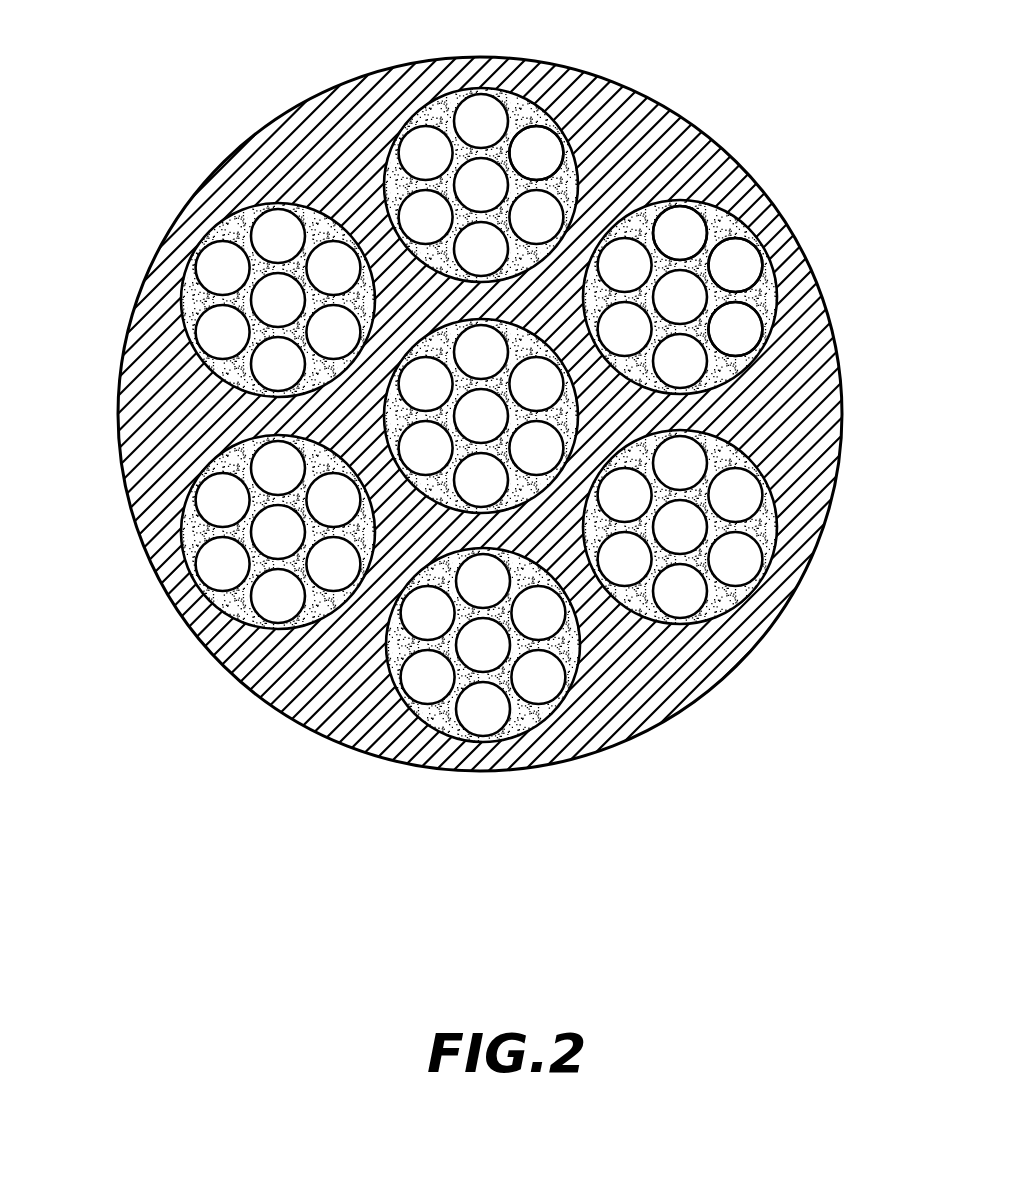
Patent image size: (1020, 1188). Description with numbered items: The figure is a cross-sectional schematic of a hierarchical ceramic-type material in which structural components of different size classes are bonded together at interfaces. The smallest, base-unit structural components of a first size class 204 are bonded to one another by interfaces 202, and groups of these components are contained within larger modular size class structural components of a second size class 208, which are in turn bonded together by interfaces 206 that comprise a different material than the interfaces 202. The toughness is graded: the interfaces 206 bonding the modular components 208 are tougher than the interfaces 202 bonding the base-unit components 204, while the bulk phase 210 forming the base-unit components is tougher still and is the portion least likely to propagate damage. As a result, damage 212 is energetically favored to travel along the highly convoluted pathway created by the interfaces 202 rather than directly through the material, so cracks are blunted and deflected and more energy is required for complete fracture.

The interfaces bonding structural components of a first size class 202 is at (543, 107).
The structural components of a first size class 204 is at (537, 162).
The interfaces bonding structural components of a second size class 206 is at (253, 420).
The structural components of a second size class 208 is at (783, 523).
The bulk phase 210 is at (737, 337).
The damage 212 is at (208, 644).